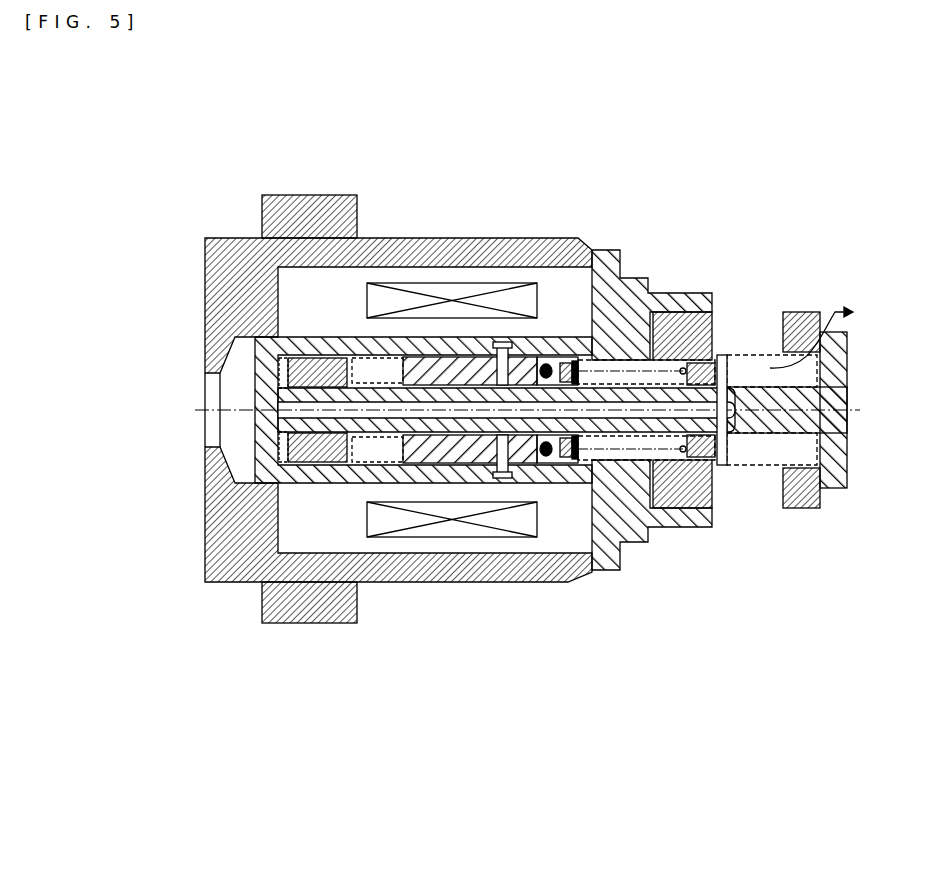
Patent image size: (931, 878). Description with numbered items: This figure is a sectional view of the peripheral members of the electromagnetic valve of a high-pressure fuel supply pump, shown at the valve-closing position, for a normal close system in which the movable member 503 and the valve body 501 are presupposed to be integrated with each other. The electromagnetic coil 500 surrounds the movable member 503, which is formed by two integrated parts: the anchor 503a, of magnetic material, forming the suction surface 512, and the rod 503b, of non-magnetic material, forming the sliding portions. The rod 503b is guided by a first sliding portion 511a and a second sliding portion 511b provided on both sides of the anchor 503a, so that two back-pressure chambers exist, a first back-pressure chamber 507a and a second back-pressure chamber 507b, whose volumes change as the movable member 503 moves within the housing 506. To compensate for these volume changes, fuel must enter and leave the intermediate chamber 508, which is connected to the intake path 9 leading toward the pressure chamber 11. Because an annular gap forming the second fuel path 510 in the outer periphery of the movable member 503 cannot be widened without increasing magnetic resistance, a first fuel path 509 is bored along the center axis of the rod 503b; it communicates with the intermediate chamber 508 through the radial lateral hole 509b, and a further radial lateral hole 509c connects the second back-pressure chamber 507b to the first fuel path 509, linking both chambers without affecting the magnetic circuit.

The electromagnetic coil 500 is at (410, 565).
The valve body 501 is at (823, 480).
The movable member 503 is at (544, 268).
The anchor 503a is at (487, 360).
The rod 503b is at (592, 360).
The housing 506 is at (265, 337).
The first back-pressure chamber 507a is at (290, 358).
The second back-pressure chamber 507b is at (345, 452).
The intermediate chamber 508 is at (640, 367).
The first fuel path 509 is at (268, 490).
The radial lateral hole 509b is at (723, 387).
The radial lateral hole 509c is at (432, 283).
The second fuel path 510 is at (500, 433).
The first sliding portion 511a is at (355, 465).
The second sliding portion 511b is at (700, 478).
The suction surface 512 is at (512, 478).
The intake path 9 is at (770, 368).
The pressure chamber 11 is at (825, 335).